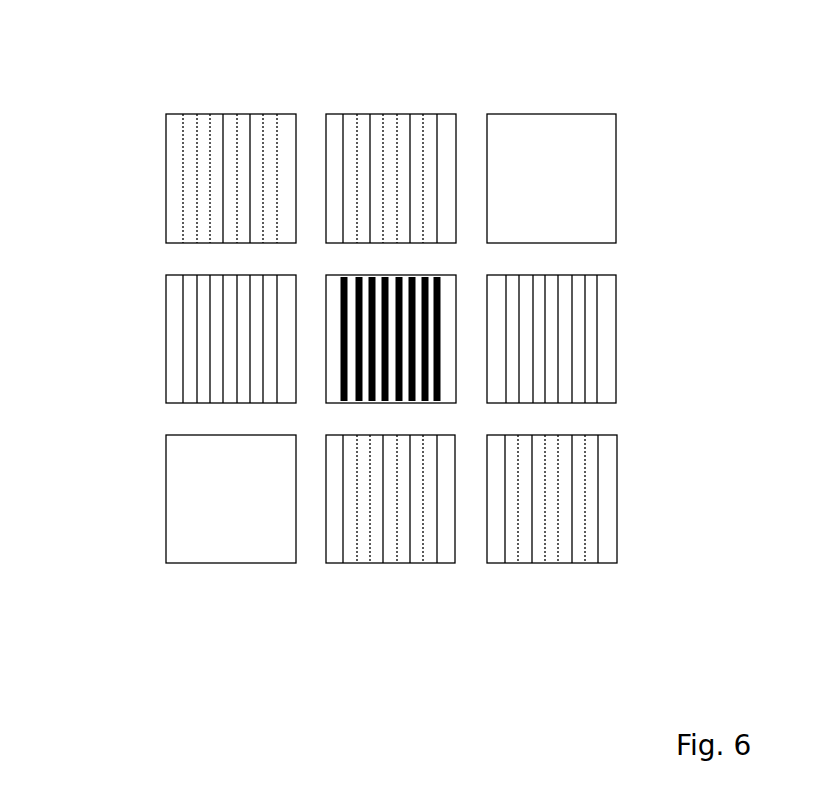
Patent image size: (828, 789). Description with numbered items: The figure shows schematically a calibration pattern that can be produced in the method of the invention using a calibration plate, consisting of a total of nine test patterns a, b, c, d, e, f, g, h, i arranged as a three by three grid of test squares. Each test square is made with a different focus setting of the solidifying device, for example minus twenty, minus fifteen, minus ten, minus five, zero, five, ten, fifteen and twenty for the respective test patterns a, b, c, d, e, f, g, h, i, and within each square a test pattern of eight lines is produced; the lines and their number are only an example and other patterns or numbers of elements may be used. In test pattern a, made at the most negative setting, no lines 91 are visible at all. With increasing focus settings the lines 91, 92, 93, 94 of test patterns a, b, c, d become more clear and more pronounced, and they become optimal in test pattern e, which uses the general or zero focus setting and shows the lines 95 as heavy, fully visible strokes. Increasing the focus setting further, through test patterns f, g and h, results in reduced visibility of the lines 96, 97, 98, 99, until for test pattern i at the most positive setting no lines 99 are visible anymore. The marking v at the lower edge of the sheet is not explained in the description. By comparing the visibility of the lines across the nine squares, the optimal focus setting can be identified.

The lines 91 is at (223, 522).
The lines 92 is at (370, 523).
The lines 93 is at (520, 515).
The lines 94 is at (585, 317).
The lines 95 is at (410, 365).
The lines 96 is at (210, 363).
The lines 97 is at (183, 183).
The lines 98 is at (407, 163).
The lines 99 is at (565, 175).
The test pattern a is at (166, 522).
The test pattern b is at (423, 562).
The test pattern c is at (597, 560).
The test pattern d is at (616, 378).
The test pattern e is at (326, 348).
The test pattern f is at (166, 342).
The test pattern g is at (214, 114).
The test pattern h is at (357, 113).
The test pattern i is at (616, 217).
The element v is at (143, 781).